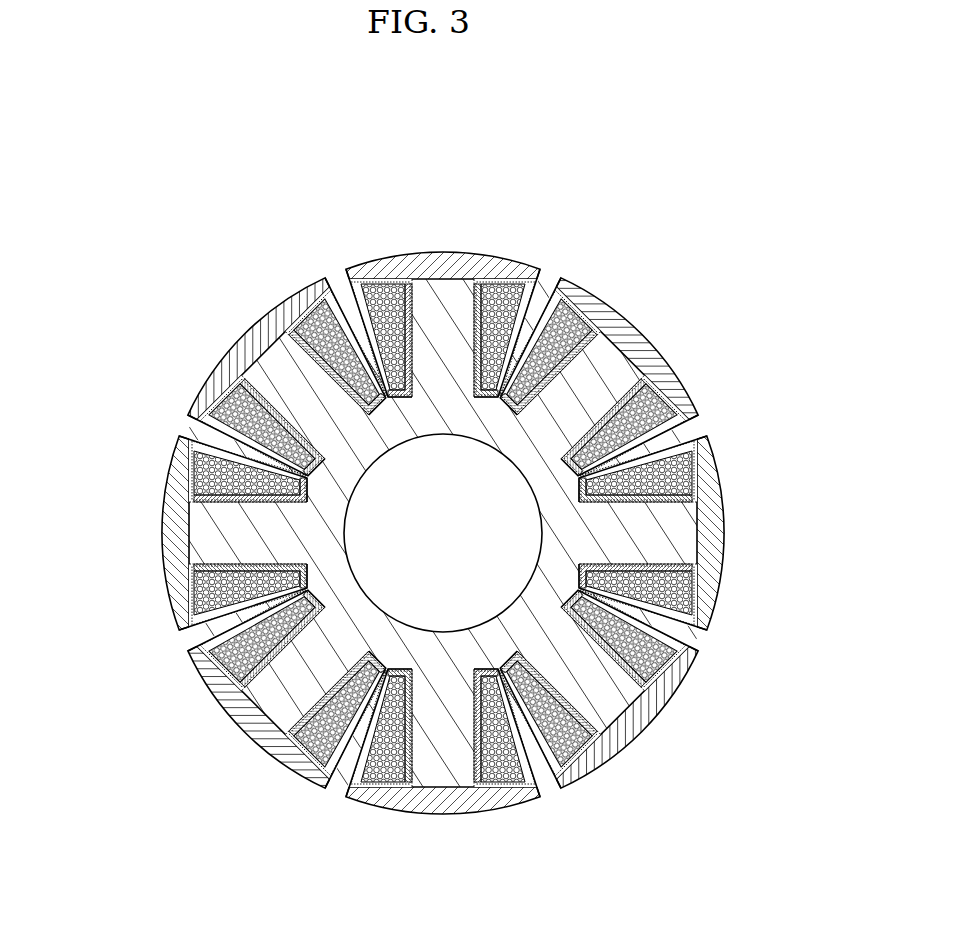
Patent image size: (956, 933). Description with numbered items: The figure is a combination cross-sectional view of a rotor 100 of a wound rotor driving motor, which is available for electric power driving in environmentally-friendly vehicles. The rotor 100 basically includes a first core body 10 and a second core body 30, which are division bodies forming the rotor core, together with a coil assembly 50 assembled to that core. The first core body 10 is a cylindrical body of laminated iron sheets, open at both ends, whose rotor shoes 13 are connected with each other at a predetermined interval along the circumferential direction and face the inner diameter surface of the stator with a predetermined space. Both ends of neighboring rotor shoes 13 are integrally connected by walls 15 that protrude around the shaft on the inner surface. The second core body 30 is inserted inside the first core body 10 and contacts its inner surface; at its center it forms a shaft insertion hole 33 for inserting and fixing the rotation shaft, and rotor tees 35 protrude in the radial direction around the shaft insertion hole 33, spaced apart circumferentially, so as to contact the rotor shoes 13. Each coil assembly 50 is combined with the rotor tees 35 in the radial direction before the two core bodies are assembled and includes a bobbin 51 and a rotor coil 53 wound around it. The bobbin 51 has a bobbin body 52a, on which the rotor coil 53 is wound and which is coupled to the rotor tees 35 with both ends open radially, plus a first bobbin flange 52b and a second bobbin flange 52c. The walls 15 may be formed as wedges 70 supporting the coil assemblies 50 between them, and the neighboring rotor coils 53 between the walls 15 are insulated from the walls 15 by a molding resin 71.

The rotor 100 is at (462, 123).
The first core body 10 is at (670, 350).
The rotor shoe 13 is at (610, 305).
The wall 15 is at (341, 298).
The second core body 30 is at (452, 447).
The shaft insertion hole 33 is at (413, 574).
The rotor tee 35 is at (443, 750).
The coil assembly 50 is at (668, 667).
The bobbin 51 is at (80, 532).
The bobbin body 52a is at (245, 563).
The first bobbin flange 52b is at (300, 580).
The second bobbin flange 52c is at (192, 683).
The rotor coil 53 is at (627, 638).
The wedge 70 is at (195, 433).
The molding resin 71 is at (695, 640).